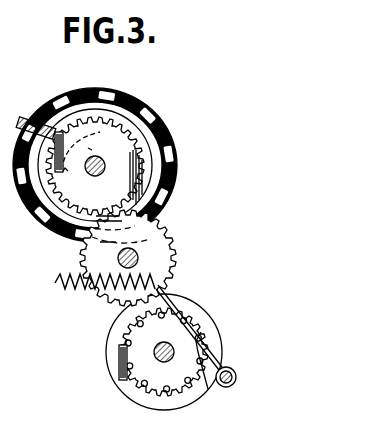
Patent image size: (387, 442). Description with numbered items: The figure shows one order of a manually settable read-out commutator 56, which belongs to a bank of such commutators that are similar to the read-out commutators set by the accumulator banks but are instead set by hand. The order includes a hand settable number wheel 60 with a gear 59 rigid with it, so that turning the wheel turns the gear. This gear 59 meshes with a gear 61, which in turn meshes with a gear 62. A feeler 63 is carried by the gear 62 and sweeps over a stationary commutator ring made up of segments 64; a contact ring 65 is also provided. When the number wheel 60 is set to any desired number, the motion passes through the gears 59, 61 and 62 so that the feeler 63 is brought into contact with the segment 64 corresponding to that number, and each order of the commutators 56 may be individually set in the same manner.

The manually settable read-out commutator 56 is at (129, 97).
The segment 64 is at (104, 89).
The feeler 63 is at (37, 118).
The gear 62 is at (123, 161).
The contact ring 65 is at (48, 232).
The gear 61 is at (165, 253).
The hand settable number wheel 60 is at (107, 333).
The gear 59 is at (125, 371).